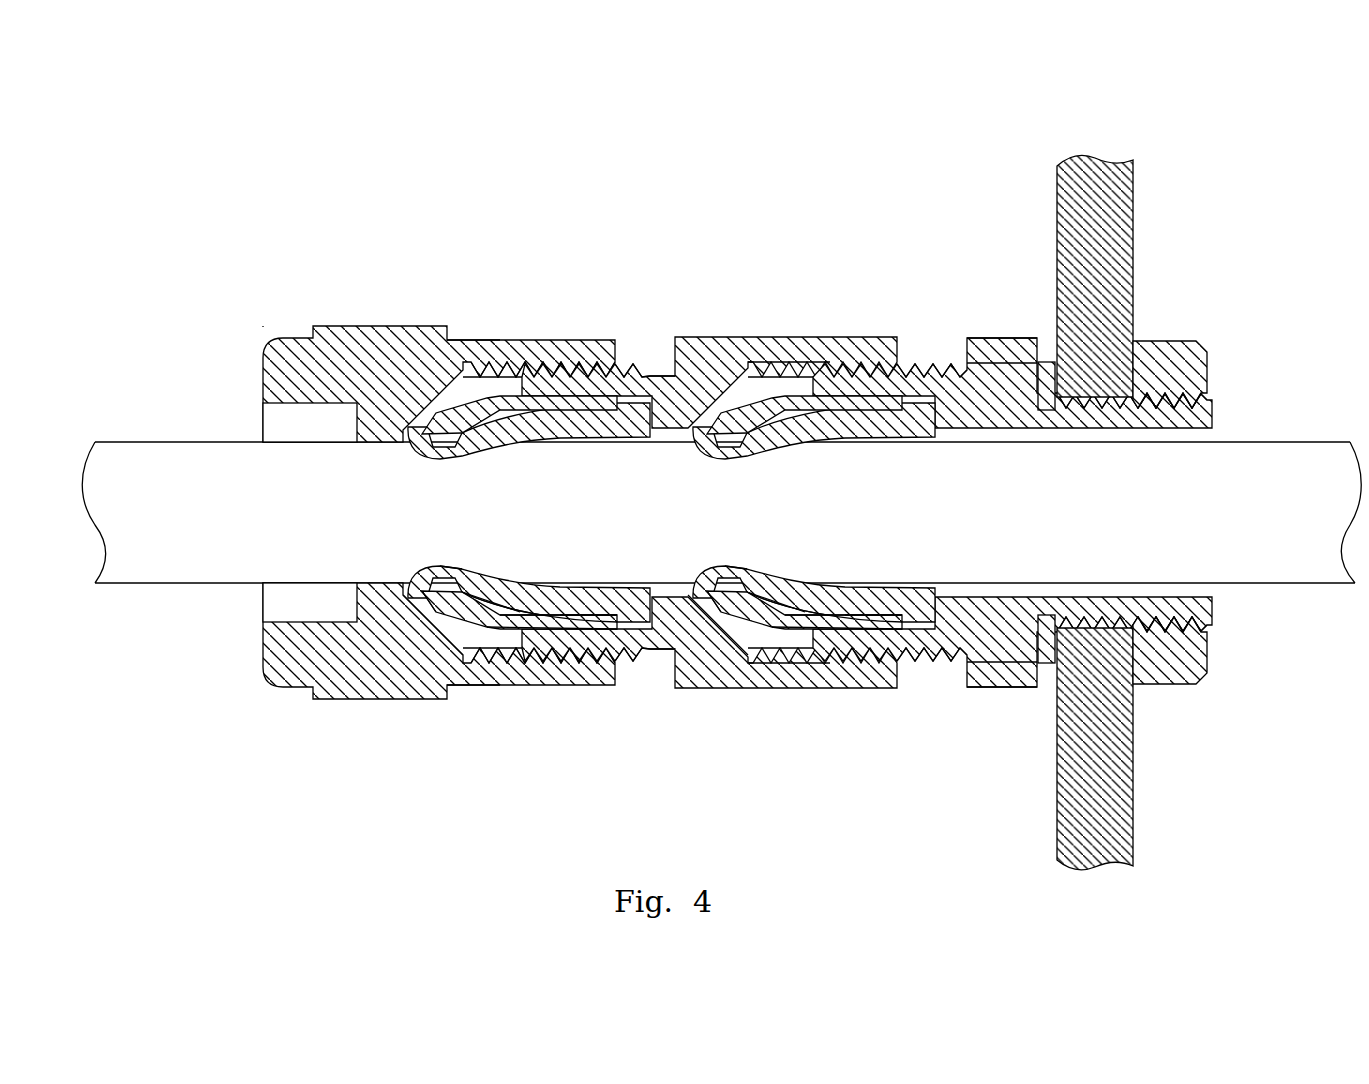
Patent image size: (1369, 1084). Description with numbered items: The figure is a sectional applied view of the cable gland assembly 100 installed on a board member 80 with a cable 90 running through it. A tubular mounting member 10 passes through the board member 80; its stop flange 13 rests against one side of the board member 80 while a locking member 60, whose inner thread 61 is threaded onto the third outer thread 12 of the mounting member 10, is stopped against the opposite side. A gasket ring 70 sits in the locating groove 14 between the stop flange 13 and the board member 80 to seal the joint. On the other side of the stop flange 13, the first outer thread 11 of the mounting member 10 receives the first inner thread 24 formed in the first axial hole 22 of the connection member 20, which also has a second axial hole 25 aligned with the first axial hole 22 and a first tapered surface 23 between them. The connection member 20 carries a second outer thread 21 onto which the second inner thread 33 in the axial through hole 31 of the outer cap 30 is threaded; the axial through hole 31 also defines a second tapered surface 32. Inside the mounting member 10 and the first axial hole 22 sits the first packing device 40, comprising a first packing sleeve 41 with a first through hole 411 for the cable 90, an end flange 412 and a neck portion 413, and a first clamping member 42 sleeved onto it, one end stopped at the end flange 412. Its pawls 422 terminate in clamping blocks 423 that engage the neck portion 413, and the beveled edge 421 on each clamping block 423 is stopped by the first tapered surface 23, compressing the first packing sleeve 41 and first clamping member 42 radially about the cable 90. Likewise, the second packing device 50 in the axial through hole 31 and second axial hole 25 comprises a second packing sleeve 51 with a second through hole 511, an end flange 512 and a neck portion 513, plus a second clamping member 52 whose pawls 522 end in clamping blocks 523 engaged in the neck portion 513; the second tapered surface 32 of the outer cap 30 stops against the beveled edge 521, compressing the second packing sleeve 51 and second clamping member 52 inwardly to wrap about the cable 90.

The cable gland assembly 100 is at (670, 172).
The mounting member 10 is at (960, 318).
The first outer thread 11 is at (905, 368).
The third outer thread 12 is at (1220, 403).
The stop flange 13 is at (1017, 333).
The locating groove 14 is at (1045, 360).
The connection member 20 is at (815, 330).
The second outer thread 21 is at (632, 375).
The first axial hole 22 is at (745, 390).
The first tapered surface 23 is at (655, 365).
The first inner thread 24 is at (790, 345).
The second axial hole 25 is at (490, 358).
The outer cap 30 is at (300, 345).
The axial through hole 31 is at (330, 430).
The second tapered surface 32 is at (390, 346).
The second inner thread 33 is at (513, 395).
The first packing device 40 is at (770, 640).
The first packing sleeve 41 is at (870, 645).
The first through hole 411 is at (880, 590).
The end flange 412 is at (915, 625).
The neck portion 413 is at (705, 590).
The first clamping member 42 is at (830, 650).
The beveled edge 421 is at (700, 640).
The pawls 422 is at (740, 640).
The clamping block 423 is at (740, 596).
The second packing device 50 is at (510, 625).
The second packing sleeve 51 is at (600, 600).
The second through hole 511 is at (575, 600).
The end flange 512 is at (645, 635).
The neck portion 513 is at (420, 600).
The second clamping member 52 is at (555, 650).
The beveled edge 521 is at (430, 630).
The pawls 522 is at (470, 640).
The clamping block 523 is at (445, 605).
The locking member 60 is at (1160, 330).
The inner thread 61 is at (1180, 395).
The gasket ring 70 is at (1046, 665).
The board member 80 is at (1112, 225).
The cable 90 is at (152, 462).